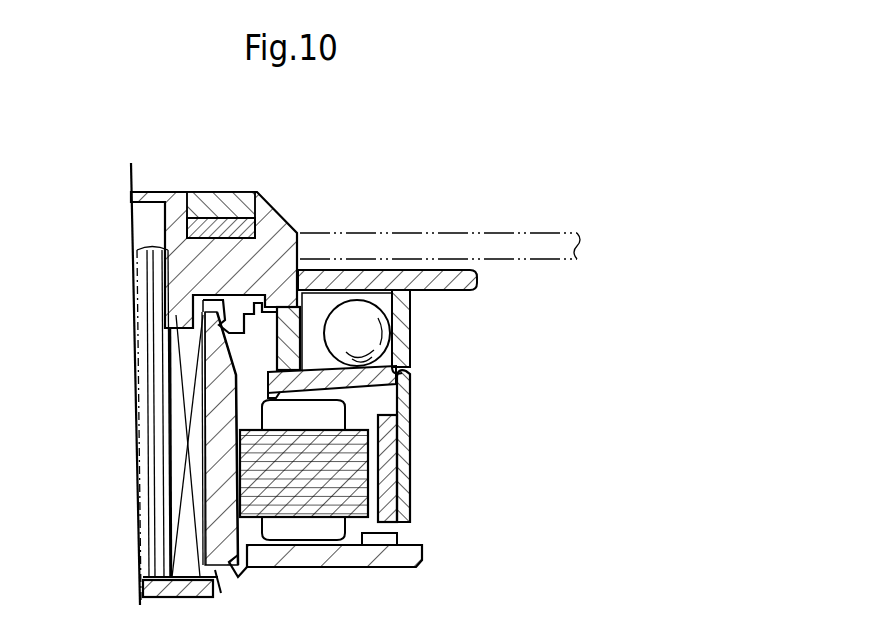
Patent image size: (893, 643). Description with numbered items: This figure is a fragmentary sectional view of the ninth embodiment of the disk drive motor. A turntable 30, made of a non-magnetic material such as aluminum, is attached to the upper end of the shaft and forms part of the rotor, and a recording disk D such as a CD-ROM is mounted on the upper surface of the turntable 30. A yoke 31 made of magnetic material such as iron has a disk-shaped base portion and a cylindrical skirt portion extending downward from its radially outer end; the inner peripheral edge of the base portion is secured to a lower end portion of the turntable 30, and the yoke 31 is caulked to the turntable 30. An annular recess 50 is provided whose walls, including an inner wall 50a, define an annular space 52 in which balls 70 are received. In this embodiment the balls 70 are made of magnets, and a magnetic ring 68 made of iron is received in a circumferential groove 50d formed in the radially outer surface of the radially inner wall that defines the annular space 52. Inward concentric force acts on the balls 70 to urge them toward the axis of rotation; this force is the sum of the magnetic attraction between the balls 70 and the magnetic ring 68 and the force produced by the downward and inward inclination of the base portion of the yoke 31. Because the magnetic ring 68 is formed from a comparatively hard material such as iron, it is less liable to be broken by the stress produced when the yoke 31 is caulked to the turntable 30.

The turntable 30 is at (277, 220).
The annular recess 50 is at (341, 282).
The inner wall 50a is at (268, 340).
The circumferential groove 50d is at (327, 327).
The annular space 52 is at (380, 300).
The balls 70 is at (380, 352).
The magnetic ring 68 is at (273, 370).
The yoke 31 is at (415, 487).
The recording disk D is at (557, 240).